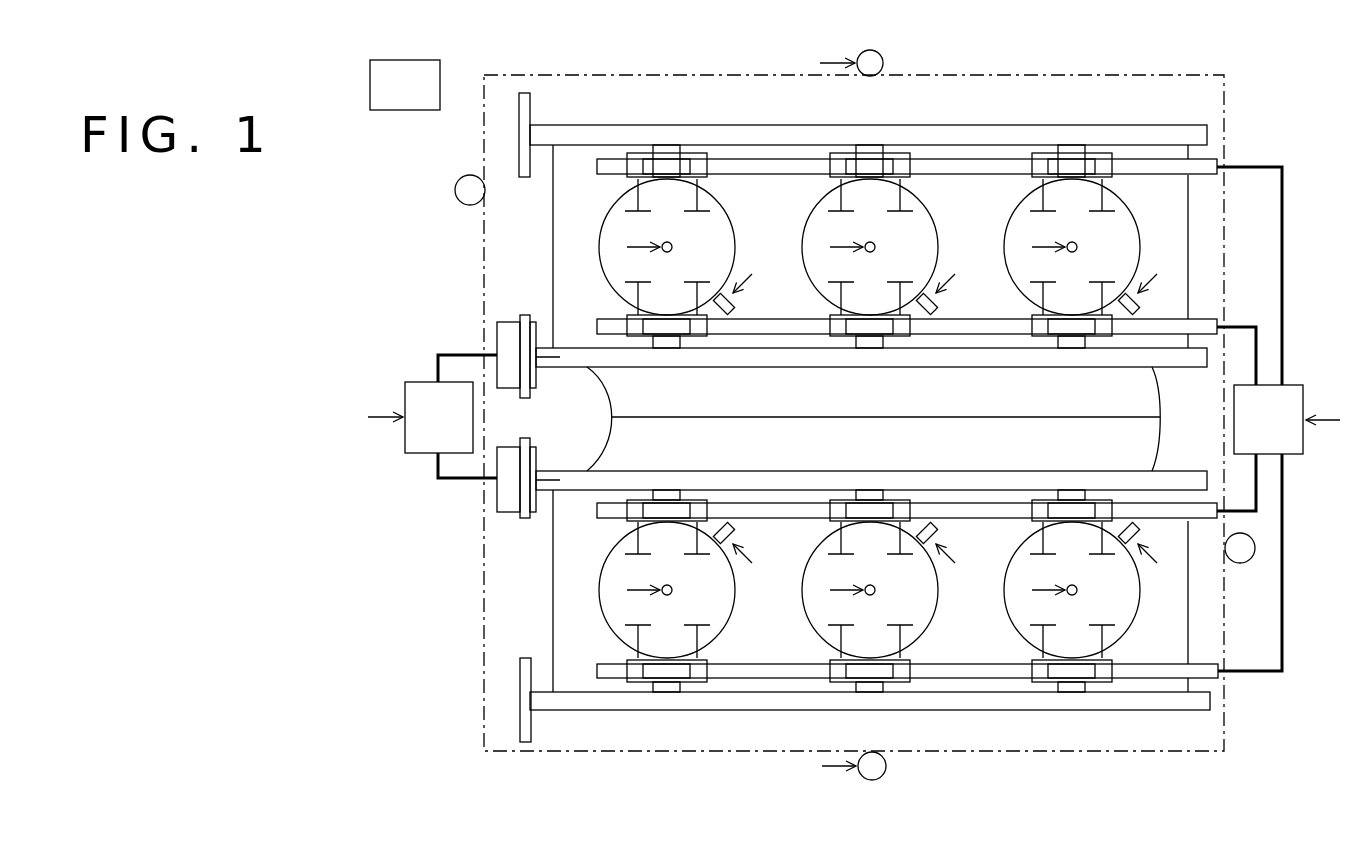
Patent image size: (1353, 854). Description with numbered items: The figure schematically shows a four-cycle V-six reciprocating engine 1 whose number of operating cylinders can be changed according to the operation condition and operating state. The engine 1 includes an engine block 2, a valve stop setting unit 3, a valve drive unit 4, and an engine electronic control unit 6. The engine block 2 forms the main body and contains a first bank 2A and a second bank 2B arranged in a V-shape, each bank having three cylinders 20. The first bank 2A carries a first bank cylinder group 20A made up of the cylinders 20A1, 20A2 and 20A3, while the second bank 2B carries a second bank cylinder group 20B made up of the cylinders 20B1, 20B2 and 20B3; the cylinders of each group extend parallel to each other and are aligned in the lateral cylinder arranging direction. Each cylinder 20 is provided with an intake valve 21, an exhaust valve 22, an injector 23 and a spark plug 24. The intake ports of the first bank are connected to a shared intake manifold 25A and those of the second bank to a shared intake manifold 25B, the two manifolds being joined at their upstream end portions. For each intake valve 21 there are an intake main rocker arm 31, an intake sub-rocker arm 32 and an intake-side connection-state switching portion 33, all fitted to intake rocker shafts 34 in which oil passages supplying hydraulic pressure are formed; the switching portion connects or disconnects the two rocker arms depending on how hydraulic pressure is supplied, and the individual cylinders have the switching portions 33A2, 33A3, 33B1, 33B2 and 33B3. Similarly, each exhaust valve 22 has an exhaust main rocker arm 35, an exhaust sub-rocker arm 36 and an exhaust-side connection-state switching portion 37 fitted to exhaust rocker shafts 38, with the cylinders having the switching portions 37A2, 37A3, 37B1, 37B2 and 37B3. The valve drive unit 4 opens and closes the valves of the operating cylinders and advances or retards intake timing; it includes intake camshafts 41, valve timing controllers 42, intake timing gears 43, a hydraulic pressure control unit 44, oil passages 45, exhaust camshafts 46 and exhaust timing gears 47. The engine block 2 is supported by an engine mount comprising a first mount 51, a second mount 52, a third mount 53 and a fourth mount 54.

The four-cycle V-six reciprocating engine 1 is at (1334, 64).
The engine block 2 is at (1224, 106).
The first bank 2A is at (1188, 246).
The second bank 2B is at (1188, 598).
The valve stop setting unit 3 is at (1302, 268).
The valve drive unit 4 is at (420, 325).
The engine electronic control unit 6 is at (440, 72).
The cylinder 20 is at (735, 206).
The first bank cylinder group 20A is at (584, 247).
The second bank cylinder group 20B is at (584, 593).
The cylinder 20A1 is at (759, 261).
The cylinder 20A2 is at (960, 259).
The cylinder 20A3 is at (1164, 261).
The cylinder 20B1 is at (759, 604).
The cylinder 20B2 is at (960, 604).
The cylinder 20B3 is at (1164, 604).
The intake valve 21 is at (638, 300).
The exhaust valve 22 is at (638, 200).
The injector 23 is at (1150, 306).
The spark plug 24 is at (1082, 244).
The intake manifold 25A is at (1155, 376).
The intake manifold 25B is at (1155, 465).
The intake main rocker arm 31 is at (650, 337).
The intake sub-rocker arm 32 is at (667, 349).
The intake-side connection-state switching portion 33 is at (711, 367).
The intake-side connection-state switching portion 33A2 is at (870, 337).
The intake-side connection-state switching portion 33A3 is at (1072, 337).
The intake-side connection-state switching portion 33B1 is at (667, 503).
The intake-side connection-state switching portion 33B2 is at (870, 503).
The intake-side connection-state switching portion 33B3 is at (1072, 503).
The intake rocker shaft 34 is at (975, 336).
The exhaust main rocker arm 35 is at (648, 160).
The exhaust sub-rocker arm 36 is at (667, 145).
The exhaust-side connection-state switching portion 37 is at (707, 130).
The exhaust-side connection-state switching portion 37A2 is at (871, 165).
The exhaust-side connection-state switching portion 37A3 is at (1072, 165).
The exhaust-side connection-state switching portion 37B1 is at (668, 692).
The exhaust-side connection-state switching portion 37B2 is at (870, 692).
The exhaust-side connection-state switching portion 37B3 is at (1072, 692).
The exhaust rocker shaft 38 is at (975, 158).
The intake camshaft 41 is at (560, 367).
The valve timing controller 42 is at (497, 335).
The intake timing gear 43 is at (525, 320).
The hydraulic pressure control unit 44 is at (421, 454).
The oil passage 45 is at (436, 360).
The exhaust camshaft 46 is at (1175, 139).
The exhaust timing gear 47 is at (520, 726).
The first mount 51 is at (883, 62).
The second mount 52 is at (886, 770).
The third mount 53 is at (455, 190).
The fourth mount 54 is at (1255, 548).